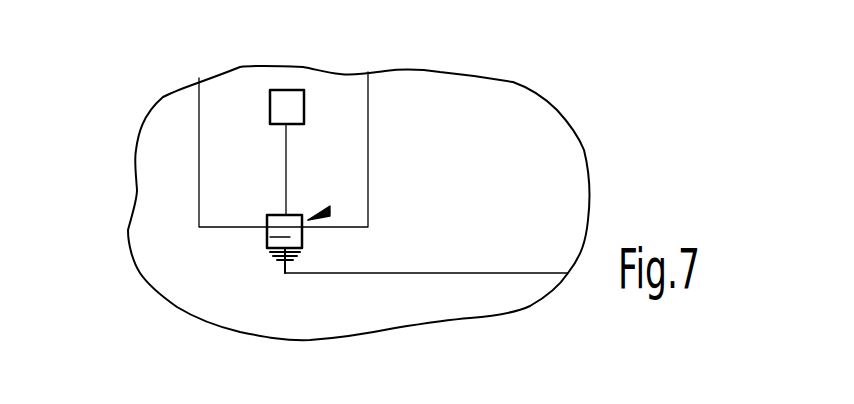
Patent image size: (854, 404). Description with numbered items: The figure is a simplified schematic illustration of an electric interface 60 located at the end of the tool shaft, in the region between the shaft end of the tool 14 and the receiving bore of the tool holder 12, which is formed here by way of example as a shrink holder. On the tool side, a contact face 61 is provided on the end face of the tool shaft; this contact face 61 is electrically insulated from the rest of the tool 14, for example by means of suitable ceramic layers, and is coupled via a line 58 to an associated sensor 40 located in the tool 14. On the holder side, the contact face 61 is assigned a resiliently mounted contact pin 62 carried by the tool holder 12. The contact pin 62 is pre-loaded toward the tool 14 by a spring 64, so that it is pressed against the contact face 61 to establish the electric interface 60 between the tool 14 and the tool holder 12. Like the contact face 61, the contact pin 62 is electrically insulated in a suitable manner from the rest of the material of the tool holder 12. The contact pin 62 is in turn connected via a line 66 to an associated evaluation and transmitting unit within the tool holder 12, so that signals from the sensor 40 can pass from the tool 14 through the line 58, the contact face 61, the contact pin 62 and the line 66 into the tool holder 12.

The tool holder 12 is at (505, 107).
The tool 14 is at (333, 97).
The sensor 40 is at (283, 110).
The line 58 is at (286, 168).
The electric interface 60 is at (326, 212).
The contact face 61 is at (271, 215).
The contact pin 62 is at (280, 236).
The spring 64 is at (272, 257).
The line 66 is at (485, 273).